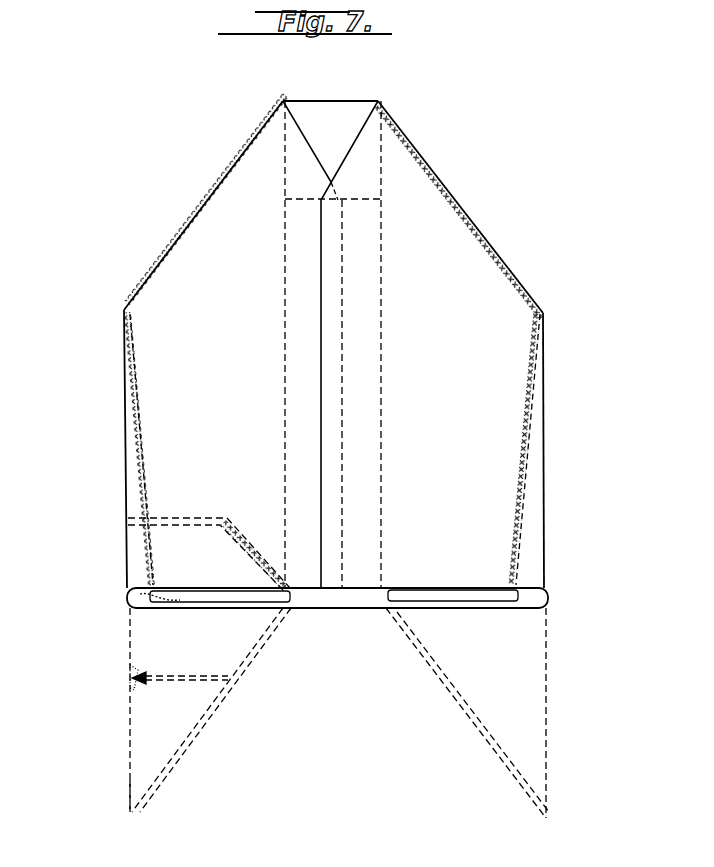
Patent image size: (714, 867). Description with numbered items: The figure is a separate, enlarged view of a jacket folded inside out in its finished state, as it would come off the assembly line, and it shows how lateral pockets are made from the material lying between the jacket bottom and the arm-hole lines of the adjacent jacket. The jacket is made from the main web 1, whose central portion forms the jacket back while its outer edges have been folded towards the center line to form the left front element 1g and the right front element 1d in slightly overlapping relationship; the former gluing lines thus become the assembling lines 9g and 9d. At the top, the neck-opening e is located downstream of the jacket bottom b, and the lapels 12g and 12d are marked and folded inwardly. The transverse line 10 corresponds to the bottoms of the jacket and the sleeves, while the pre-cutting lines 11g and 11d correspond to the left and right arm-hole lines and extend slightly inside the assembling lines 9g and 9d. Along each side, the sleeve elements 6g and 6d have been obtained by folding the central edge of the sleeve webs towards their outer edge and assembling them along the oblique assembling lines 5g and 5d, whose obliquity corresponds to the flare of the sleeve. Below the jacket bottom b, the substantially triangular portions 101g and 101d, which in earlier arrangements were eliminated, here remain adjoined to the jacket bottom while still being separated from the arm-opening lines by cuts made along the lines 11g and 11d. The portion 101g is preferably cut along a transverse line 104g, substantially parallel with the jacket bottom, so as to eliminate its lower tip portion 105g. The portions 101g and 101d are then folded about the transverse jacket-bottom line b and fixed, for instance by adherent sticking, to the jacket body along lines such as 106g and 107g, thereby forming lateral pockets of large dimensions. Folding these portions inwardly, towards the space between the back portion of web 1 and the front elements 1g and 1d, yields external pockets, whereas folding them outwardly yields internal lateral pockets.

The transverse line 10 is at (334, 101).
The neck-opening e is at (311, 101).
The assembling line 9g is at (206, 207).
The pre-cutting line 11g is at (206, 760).
The assembling line 9d is at (444, 183).
The pre-cutting line 11d is at (463, 745).
The lapel 12g is at (285, 200).
The lapel 12d is at (365, 190).
The jacket front element 1g is at (160, 366).
The jacket front element 1d is at (516, 371).
The oblique assembling line 5g is at (140, 430).
The oblique assembling line 5d is at (522, 438).
The assembling line 106g is at (243, 542).
The assembling line 107g is at (252, 548).
The jacket bottom b is at (307, 609).
The main web 1 is at (343, 609).
The sleeve element 6g is at (212, 604).
The sleeve element 6d is at (455, 605).
The portion 101g is at (140, 718).
The portion 101d is at (525, 700).
The transverse line 104g is at (220, 682).
The tip portion 105g is at (132, 770).